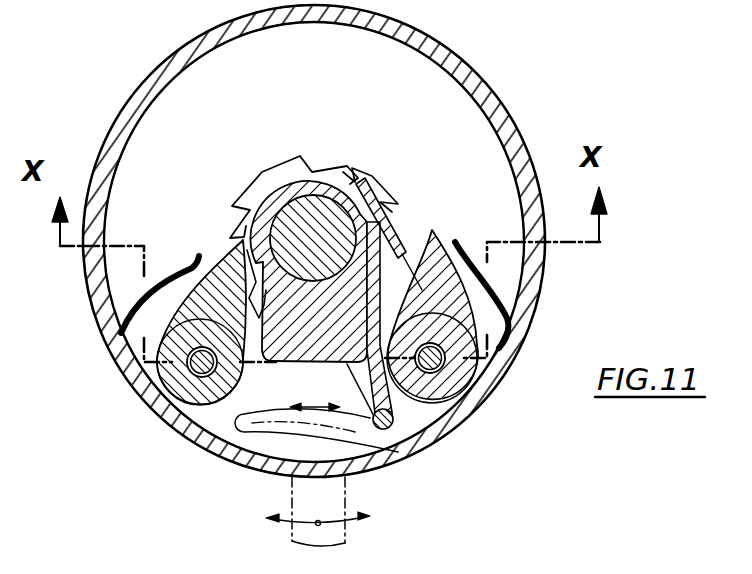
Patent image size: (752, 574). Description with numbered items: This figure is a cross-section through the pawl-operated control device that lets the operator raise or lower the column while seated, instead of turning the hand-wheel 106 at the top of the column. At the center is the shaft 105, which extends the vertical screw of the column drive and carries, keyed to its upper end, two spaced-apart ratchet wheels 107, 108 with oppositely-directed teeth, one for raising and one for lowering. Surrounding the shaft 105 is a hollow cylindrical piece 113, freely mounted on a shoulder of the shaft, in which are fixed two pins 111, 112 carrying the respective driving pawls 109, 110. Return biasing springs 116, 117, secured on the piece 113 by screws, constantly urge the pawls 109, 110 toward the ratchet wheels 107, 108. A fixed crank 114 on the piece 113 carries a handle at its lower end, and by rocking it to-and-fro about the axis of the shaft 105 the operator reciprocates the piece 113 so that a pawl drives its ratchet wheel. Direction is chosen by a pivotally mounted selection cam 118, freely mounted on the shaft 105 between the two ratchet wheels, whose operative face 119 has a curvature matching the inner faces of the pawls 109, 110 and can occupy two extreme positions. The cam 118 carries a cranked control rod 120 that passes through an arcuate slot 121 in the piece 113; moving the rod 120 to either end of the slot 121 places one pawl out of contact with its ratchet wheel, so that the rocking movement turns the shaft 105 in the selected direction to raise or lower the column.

The shaft 105 is at (301, 227).
The hand-wheel 106 is at (592, 564).
The ratchet wheel 107 is at (366, 188).
The ratchet wheel 108 is at (266, 171).
The driving pawl 109 is at (199, 393).
The driving pawl 110 is at (456, 378).
The pin 111 is at (192, 372).
The pin 112 is at (432, 372).
The hollow cylindrical piece 113 is at (474, 88).
The crank 114 is at (344, 538).
The return biasing spring 116 is at (152, 290).
The return biasing spring 117 is at (472, 262).
The selection cam 118 is at (258, 250).
The operative face 119 is at (317, 364).
The cranked control rod 120 is at (388, 432).
The arcuate slot 121 is at (268, 431).